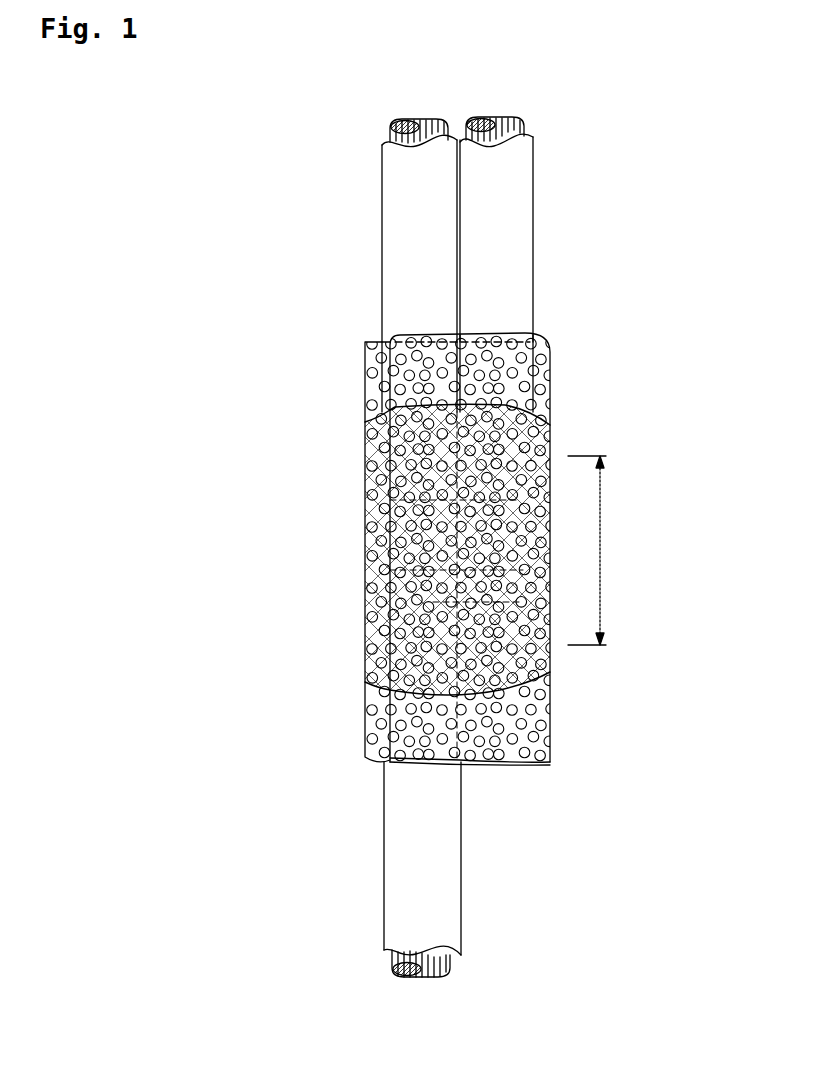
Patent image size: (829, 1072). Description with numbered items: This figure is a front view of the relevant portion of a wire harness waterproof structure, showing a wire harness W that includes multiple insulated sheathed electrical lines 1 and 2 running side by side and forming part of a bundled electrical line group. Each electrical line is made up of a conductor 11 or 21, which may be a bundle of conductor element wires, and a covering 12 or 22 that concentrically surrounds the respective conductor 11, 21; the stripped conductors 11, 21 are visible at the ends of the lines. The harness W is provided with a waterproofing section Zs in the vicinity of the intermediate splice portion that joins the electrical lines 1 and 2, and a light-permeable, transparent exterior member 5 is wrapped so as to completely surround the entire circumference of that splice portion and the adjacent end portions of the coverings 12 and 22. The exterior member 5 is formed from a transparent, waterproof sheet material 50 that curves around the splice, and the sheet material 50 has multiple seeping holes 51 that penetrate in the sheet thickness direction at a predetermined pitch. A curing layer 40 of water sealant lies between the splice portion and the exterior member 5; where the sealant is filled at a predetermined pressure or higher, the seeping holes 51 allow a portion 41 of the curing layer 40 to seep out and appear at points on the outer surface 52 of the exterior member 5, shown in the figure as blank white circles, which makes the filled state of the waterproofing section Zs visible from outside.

The wire harness W is at (565, 182).
The electrical line 1 is at (419, 550).
The electrical line 2 is at (525, 228).
The conductor 11 is at (390, 129).
The covering 12 is at (381, 215).
The conductor 21 is at (526, 128).
The covering 22 is at (534, 214).
The exterior member 5 is at (448, 561).
The sheet material 50 is at (366, 701).
The curing layer 40 is at (453, 550).
The portion of the curing layer 41 is at (551, 445).
The seeping holes 51 is at (552, 370).
The outer surface 52 is at (551, 733).
The waterproofing section Zs is at (597, 550).